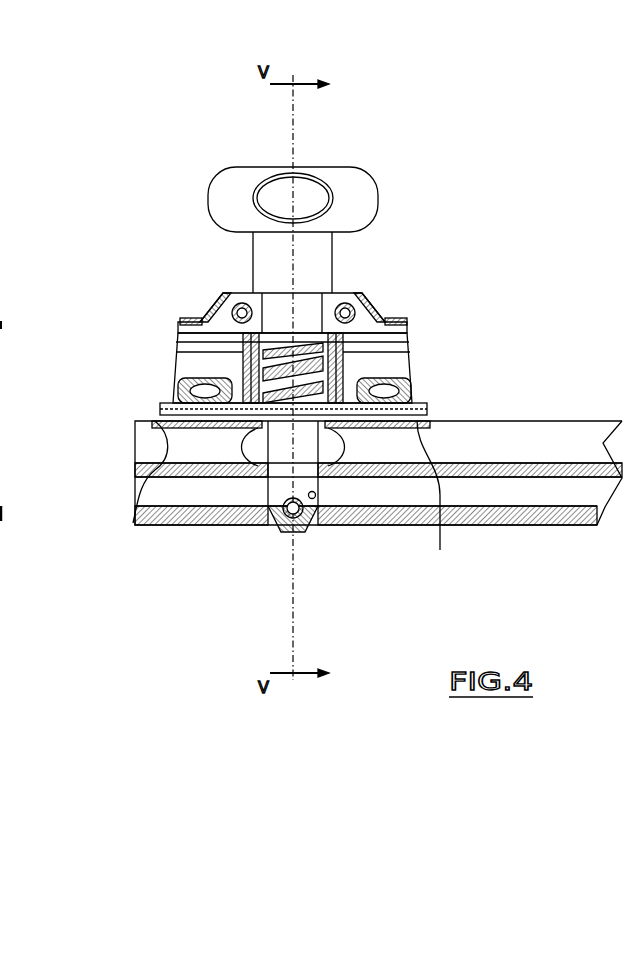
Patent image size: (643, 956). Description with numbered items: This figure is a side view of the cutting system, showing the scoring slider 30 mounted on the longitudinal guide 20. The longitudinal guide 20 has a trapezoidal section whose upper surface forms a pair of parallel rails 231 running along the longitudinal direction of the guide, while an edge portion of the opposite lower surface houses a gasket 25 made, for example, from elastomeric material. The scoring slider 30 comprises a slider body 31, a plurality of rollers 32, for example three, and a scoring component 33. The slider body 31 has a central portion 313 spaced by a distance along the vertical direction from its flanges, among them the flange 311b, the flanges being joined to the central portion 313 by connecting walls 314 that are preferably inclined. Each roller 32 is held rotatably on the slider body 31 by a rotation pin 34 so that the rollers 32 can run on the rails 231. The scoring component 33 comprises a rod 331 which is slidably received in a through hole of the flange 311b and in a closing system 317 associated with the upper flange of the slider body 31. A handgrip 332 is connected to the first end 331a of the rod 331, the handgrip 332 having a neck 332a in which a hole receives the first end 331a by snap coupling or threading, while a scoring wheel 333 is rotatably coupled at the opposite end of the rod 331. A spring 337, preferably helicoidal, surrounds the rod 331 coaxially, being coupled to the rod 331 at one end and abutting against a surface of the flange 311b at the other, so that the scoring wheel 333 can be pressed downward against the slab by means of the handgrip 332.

The scoring slider 30 is at (310, 347).
The scoring component 33 is at (327, 178).
The handgrip 332 is at (332, 147).
The neck 332a is at (333, 267).
The slider body 31 is at (315, 311).
The central portion 313 is at (183, 322).
The closing system 317 is at (380, 305).
The connecting walls 314 is at (193, 347).
The spring 337 is at (345, 368).
The rotation pin 34 is at (185, 379).
The flange 311b is at (430, 406).
The rollers 32 is at (280, 499).
The rod 331 is at (326, 550).
The first end 331a is at (270, 544).
The scoring wheel 333 is at (325, 562).
The longitudinal guide 20 is at (510, 492).
The rails 231 is at (548, 443).
The gasket 25 is at (543, 525).